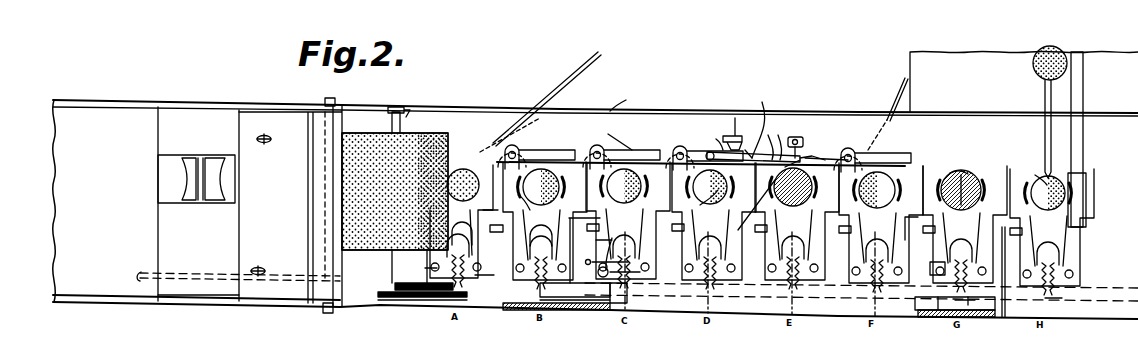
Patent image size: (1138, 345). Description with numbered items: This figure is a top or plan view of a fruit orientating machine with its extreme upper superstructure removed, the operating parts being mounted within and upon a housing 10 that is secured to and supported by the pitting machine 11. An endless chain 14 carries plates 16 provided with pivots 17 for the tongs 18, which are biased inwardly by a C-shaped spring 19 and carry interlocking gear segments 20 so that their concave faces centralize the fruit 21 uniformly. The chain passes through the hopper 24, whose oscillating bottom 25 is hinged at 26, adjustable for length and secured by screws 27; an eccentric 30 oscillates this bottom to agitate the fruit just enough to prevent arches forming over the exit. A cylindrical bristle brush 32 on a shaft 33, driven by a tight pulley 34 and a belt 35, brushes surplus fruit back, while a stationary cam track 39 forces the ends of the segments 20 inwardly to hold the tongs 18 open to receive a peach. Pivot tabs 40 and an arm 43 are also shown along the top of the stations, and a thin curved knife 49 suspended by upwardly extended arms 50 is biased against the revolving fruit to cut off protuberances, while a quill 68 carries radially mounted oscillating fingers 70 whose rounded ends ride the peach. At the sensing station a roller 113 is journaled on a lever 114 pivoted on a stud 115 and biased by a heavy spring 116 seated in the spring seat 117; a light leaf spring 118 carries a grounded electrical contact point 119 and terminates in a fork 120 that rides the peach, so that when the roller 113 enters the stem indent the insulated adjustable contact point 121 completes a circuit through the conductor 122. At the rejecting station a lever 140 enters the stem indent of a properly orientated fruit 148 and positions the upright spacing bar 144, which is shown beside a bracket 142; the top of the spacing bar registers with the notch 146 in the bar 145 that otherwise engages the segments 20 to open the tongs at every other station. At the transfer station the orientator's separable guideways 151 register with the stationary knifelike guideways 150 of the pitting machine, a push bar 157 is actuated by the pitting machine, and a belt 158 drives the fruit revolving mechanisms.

The housing 10 is at (626, 99).
The pitting machine 11 is at (928, 62).
The endless chain 14 is at (606, 250).
The plates 16 is at (615, 257).
The pivots 17 is at (523, 270).
The tongs 18 is at (192, 163).
The C-shaped spring 19 is at (461, 232).
The interlocking gear segments 20 is at (530, 283).
The fruit 21 is at (450, 168).
The hopper 24 is at (140, 300).
The oscillating bottom 25 is at (282, 298).
The hinge 26 is at (330, 313).
The screws 27 is at (265, 142).
The eccentric 30 is at (445, 298).
The cylindrical bristle brush 32 is at (409, 140).
The shaft 33 is at (391, 125).
The tight pulley 34 is at (393, 300).
The belt 35 is at (430, 292).
The stationary cam track 39 is at (243, 309).
The pivot tab 40 is at (510, 152).
The arm 43 is at (618, 133).
The curved knife 49 is at (634, 150).
The upwardly extended arms 50 is at (541, 232).
The quill 68 is at (655, 341).
The oscillating fingers 70 is at (706, 208).
The roller 113 is at (800, 158).
The lever 114 is at (804, 138).
The stud 115 is at (708, 152).
The spring 116 is at (710, 133).
The spring seat 117 is at (735, 118).
The leaf spring 118 is at (752, 139).
The electrical contact point 119 is at (753, 210).
The fork 120 is at (838, 158).
The insulated adjustable electrical contact point 121 is at (784, 138).
The electrical conductor 122 is at (764, 122).
The lever 140 is at (962, 170).
The bracket 142 is at (899, 231).
The upright spacing bar 144 is at (930, 266).
The bar 145 is at (938, 310).
The notch 146 is at (968, 303).
The fruit 148 is at (968, 178).
The stationary opposed knifelike guideways 150 is at (1045, 100).
The separable guideways 151 is at (1040, 176).
The push bar 157 is at (1084, 137).
The belt 158 is at (580, 60).